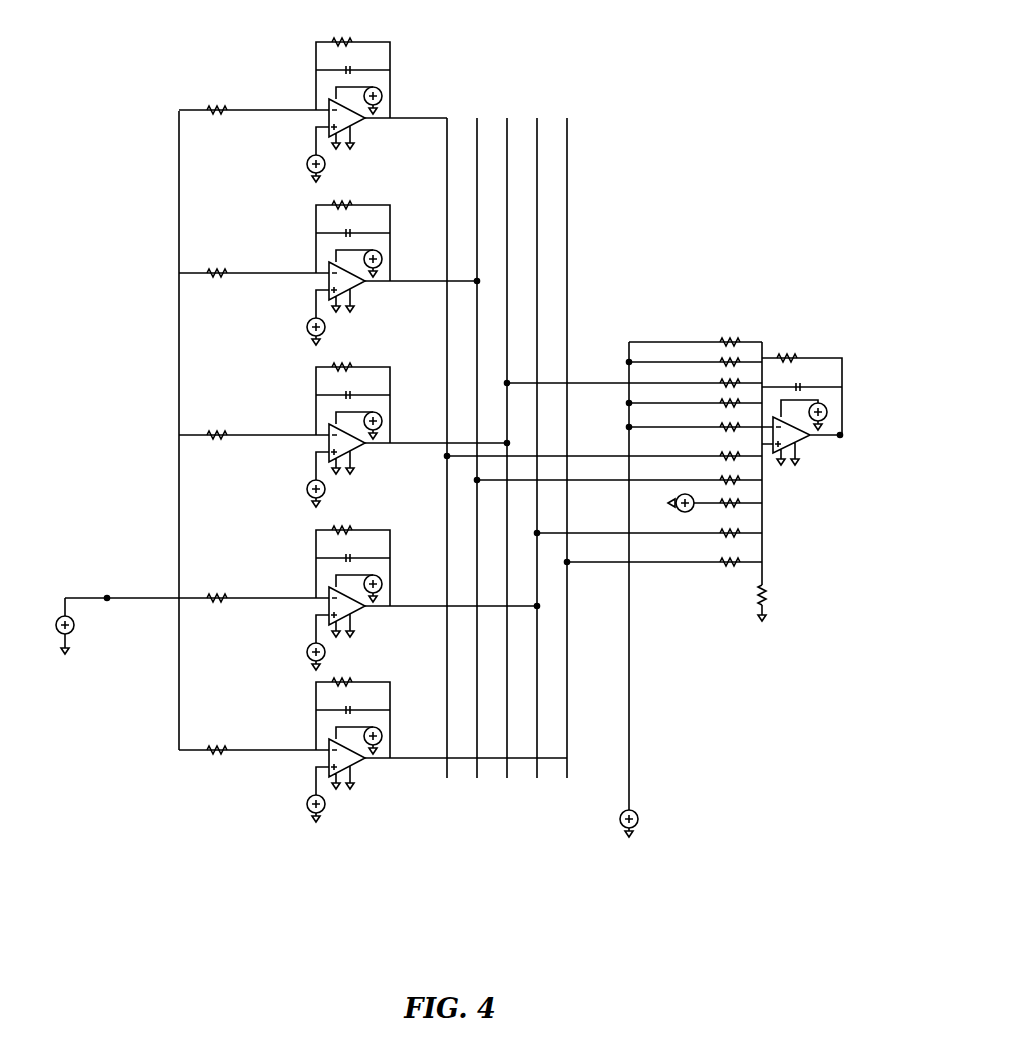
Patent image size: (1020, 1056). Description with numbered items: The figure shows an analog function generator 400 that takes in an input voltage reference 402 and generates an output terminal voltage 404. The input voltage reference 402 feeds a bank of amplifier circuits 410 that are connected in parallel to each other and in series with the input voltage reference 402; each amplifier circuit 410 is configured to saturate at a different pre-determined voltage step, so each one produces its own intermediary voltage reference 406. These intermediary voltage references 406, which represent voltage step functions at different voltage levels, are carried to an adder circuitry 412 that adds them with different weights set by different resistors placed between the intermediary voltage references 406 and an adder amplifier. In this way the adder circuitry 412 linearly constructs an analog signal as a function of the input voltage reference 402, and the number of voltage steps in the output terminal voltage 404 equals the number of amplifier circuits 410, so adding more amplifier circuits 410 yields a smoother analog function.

The analog function generator 400 is at (145, 48).
The input voltage reference 402 is at (105, 596).
The output terminal voltage 404 is at (840, 438).
The intermediary voltage references 406 is at (583, 807).
The amplifier circuits 410 is at (192, 820).
The adder circuitry 412 is at (610, 842).